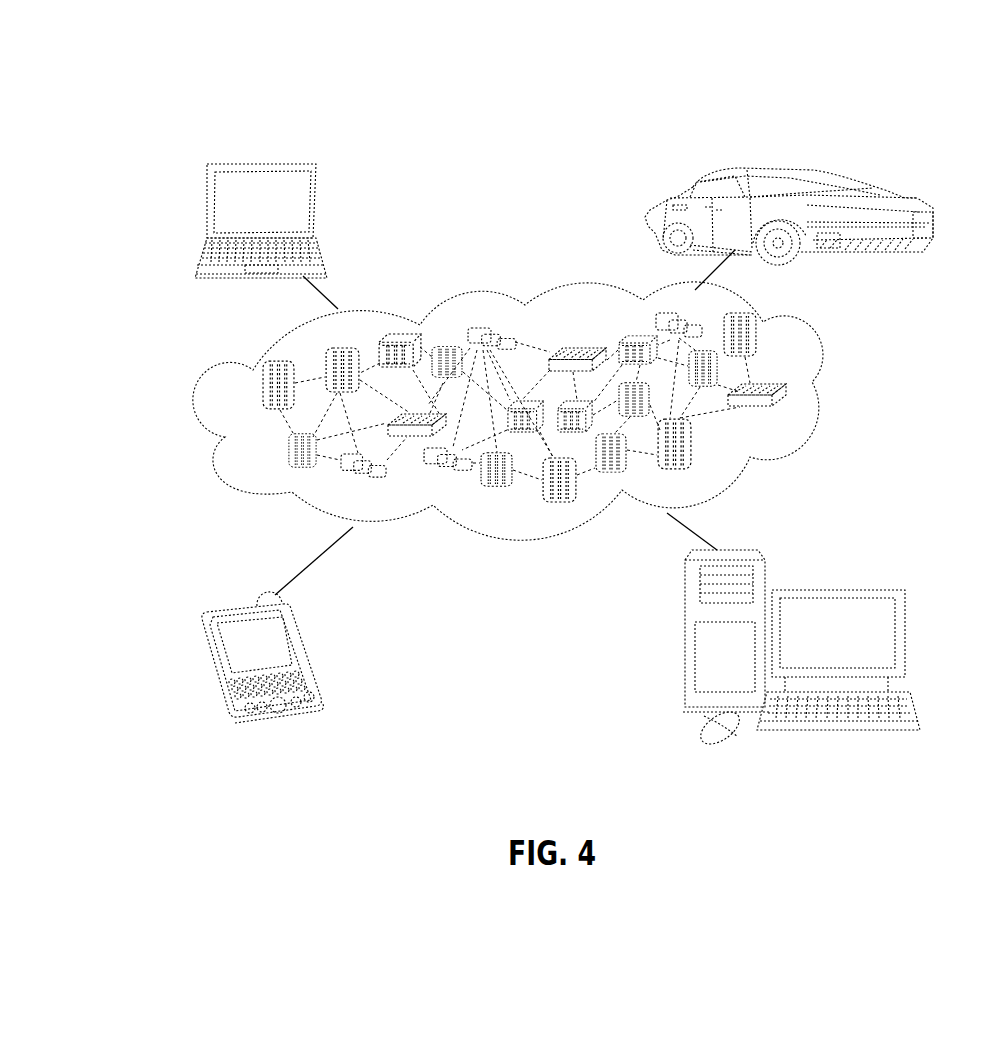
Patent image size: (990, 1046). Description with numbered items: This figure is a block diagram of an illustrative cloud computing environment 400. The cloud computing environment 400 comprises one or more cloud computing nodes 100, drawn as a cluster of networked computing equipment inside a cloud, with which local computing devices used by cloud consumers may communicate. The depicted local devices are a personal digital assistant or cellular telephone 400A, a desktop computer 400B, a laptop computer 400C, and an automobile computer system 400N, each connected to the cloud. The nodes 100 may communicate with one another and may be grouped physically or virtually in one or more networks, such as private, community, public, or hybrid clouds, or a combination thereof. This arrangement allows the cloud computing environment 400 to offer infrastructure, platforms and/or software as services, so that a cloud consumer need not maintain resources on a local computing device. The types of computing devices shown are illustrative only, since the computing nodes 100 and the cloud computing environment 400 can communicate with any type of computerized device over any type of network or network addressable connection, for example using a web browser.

The cloud computing environment 400 is at (144, 84).
The cloud computing nodes 100 is at (797, 415).
The personal digital assistant or cellular telephone 400A is at (308, 652).
The desktop computer 400B is at (835, 589).
The laptop computer 400C is at (322, 208).
The automobile computer system 400N is at (658, 217).